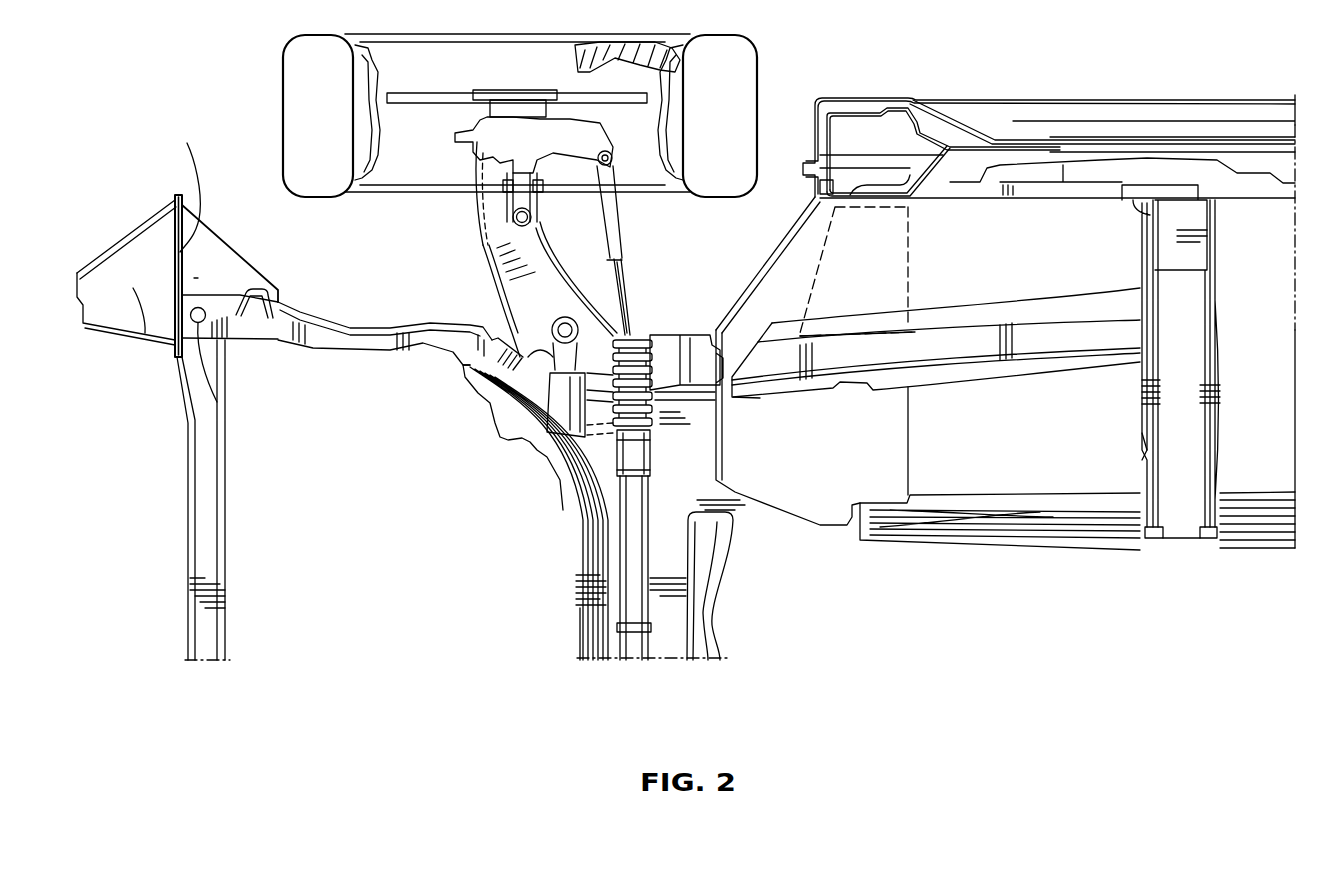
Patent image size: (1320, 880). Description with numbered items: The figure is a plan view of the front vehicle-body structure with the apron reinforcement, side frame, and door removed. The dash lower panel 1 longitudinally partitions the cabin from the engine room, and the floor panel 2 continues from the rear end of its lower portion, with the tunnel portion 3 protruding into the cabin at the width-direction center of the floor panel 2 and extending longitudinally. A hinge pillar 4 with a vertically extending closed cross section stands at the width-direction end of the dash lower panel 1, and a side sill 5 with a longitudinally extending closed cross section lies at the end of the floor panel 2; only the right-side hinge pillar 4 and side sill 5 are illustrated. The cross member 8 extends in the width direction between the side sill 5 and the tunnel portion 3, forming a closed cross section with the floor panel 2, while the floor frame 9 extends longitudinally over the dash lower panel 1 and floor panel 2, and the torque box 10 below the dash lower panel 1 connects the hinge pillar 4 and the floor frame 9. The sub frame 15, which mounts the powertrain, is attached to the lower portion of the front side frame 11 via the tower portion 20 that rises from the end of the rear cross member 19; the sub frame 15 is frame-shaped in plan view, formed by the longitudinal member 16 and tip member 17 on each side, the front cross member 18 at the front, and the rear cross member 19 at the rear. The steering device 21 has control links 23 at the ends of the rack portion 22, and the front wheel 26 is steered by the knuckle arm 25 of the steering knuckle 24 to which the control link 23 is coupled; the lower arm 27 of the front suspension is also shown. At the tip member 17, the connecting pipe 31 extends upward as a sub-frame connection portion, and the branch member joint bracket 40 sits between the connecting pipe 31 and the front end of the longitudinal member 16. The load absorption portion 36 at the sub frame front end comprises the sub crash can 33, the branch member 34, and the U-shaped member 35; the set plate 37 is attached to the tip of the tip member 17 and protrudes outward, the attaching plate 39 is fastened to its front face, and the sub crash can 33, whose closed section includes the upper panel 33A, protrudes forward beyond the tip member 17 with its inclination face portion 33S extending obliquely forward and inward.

The dash lower panel 1 is at (816, 457).
The floor panel 2 is at (1033, 437).
The tunnel portion 3 is at (1040, 530).
The hinge pillar 4 is at (856, 108).
The side sill 5 is at (1006, 203).
The cross member 8 is at (1182, 320).
The floor frame 9 is at (888, 322).
The torque box 10 is at (812, 272).
The front side frame 11 is at (673, 333).
The sub frame 15 is at (714, 624).
The longitudinal member 16 is at (353, 340).
The tip member 17 is at (255, 333).
The front cross member 18 is at (203, 530).
The rear cross member 19 is at (580, 623).
The tower portion 20 is at (543, 397).
The steering device 21 is at (612, 519).
The rack portion 22 is at (633, 558).
The control link 23 is at (623, 223).
The steering knuckle 24 is at (487, 162).
The knuckle arm 25 is at (583, 130).
The front wheel 26 is at (283, 103).
The lower arm 27 is at (487, 272).
The connecting pipe 31 is at (205, 360).
The sub crash can 33 is at (105, 332).
The upper panel 33A is at (142, 336).
The inclination face portion 33S is at (115, 250).
The branch member 34 is at (235, 248).
The U-shaped member 35 is at (194, 278).
The load absorption portion 36 is at (173, 197).
The set plate 37 is at (185, 185).
The attaching plate 39 is at (174, 262).
The branch member joint bracket 40 is at (257, 287).